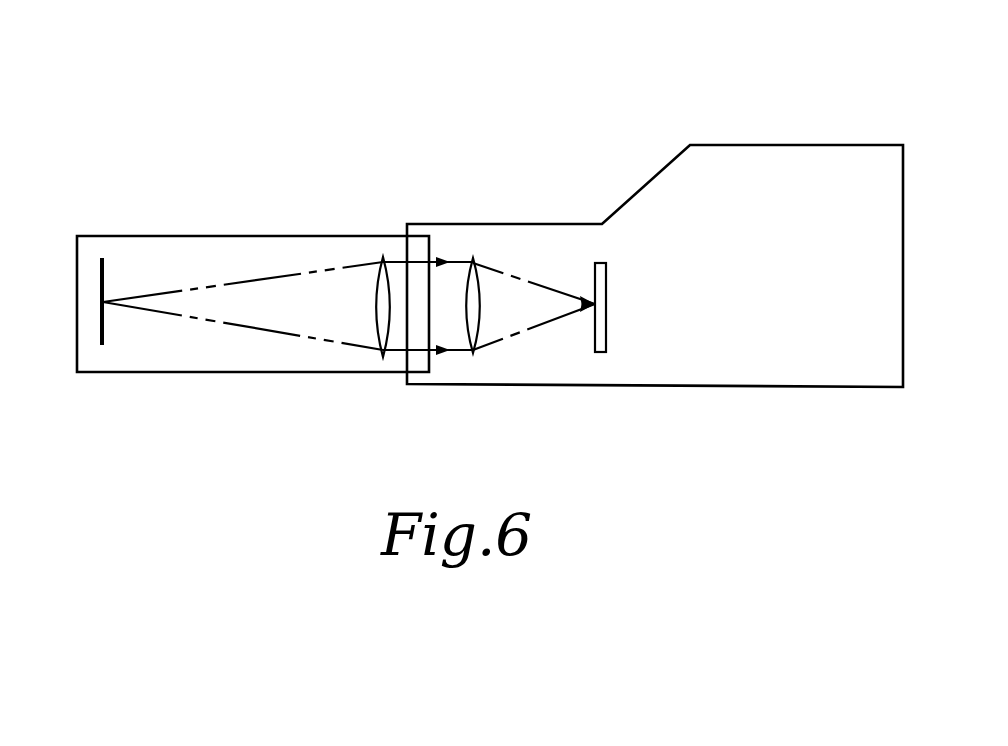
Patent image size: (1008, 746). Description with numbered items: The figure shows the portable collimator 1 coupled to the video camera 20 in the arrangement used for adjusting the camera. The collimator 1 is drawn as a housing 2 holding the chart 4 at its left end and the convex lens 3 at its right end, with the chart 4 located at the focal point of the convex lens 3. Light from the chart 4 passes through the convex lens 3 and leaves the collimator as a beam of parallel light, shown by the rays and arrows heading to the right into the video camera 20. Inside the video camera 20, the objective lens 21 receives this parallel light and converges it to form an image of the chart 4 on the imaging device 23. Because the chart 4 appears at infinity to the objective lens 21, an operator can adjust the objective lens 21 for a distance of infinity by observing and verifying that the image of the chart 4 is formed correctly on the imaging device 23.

The portable collimator 1 is at (253, 135).
The housing 2 is at (170, 236).
The convex lens 3 is at (383, 257).
The chart 4 is at (102, 278).
The video camera 20 is at (757, 133).
The objective lens 21 is at (473, 258).
The imaging device 23 is at (598, 262).